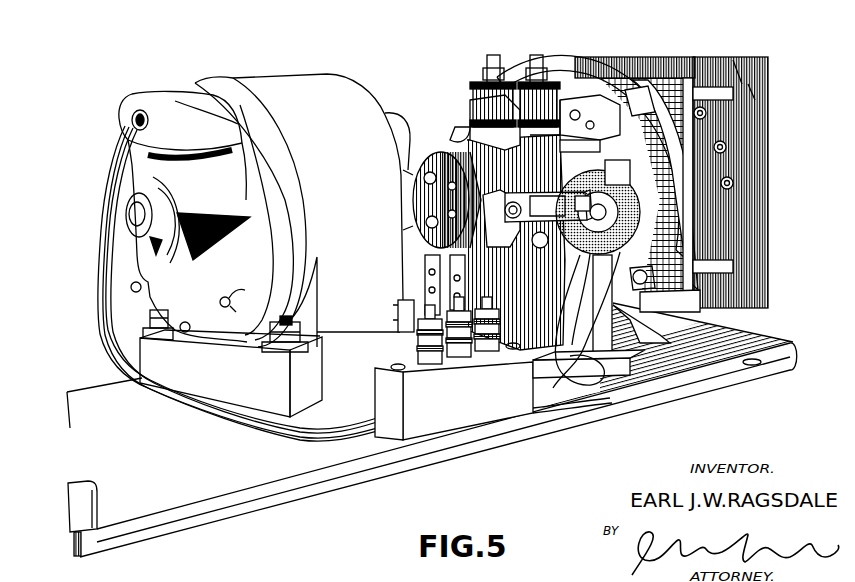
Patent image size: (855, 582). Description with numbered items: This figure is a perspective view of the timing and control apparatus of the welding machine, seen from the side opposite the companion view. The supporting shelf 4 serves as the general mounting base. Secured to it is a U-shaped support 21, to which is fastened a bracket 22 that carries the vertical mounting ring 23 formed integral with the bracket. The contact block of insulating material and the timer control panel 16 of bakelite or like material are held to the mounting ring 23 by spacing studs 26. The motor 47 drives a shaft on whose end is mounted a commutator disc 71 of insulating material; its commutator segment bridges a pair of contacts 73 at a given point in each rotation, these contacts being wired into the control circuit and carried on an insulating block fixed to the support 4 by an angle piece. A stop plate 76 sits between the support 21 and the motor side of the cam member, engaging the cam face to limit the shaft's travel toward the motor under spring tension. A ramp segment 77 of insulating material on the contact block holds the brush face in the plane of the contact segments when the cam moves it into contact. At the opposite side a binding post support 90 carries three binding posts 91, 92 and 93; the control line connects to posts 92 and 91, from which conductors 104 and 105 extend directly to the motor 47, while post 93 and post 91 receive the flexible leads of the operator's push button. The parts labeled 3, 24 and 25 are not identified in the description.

The base plate 3 is at (432, 430).
The supporting shelf 4 is at (237, 510).
The timer control panel 16 is at (765, 128).
The U-shaped support 21 is at (618, 383).
The bracket 22 is at (670, 307).
The mounting ring 23 is at (567, 80).
The bracket arm 24 is at (657, 57).
The cross bar 25 is at (680, 57).
The spacing studs 26 is at (730, 58).
The motor 47 is at (348, 201).
The commutator disc 71 is at (414, 160).
The contacts 73 is at (455, 263).
The stop plate 76 is at (522, 220).
The ramp segment 77 is at (608, 107).
The binding post support 90 is at (492, 410).
The binding post 91 is at (428, 364).
The binding post 92 is at (457, 363).
The binding post 93 is at (490, 352).
The conductor 104 is at (160, 388).
The conductor 105 is at (170, 400).